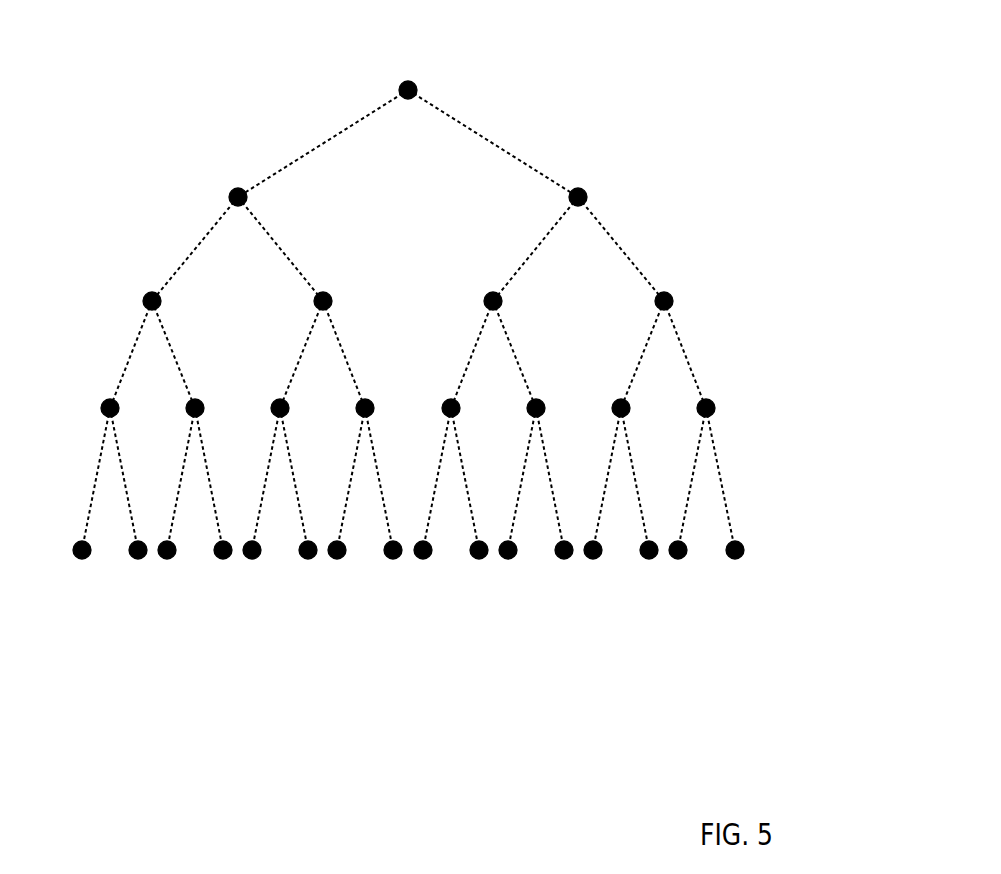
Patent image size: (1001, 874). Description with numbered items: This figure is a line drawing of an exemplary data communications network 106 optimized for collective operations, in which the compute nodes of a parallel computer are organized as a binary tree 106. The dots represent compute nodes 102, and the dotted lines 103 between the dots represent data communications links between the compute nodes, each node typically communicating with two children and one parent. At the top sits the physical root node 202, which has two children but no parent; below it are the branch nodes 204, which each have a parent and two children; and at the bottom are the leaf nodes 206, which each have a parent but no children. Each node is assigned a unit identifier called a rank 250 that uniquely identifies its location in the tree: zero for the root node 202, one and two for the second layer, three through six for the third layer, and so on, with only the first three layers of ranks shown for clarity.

The data communications network optimized for collective operations 106 is at (203, 650).
The dotted lines 103 is at (330, 138).
The compute nodes 102 is at (478, 558).
The physical root node 202 is at (430, 79).
The branch nodes 204 is at (753, 145).
The leaf nodes 206 is at (753, 555).
The rank 250 is at (541, 206).